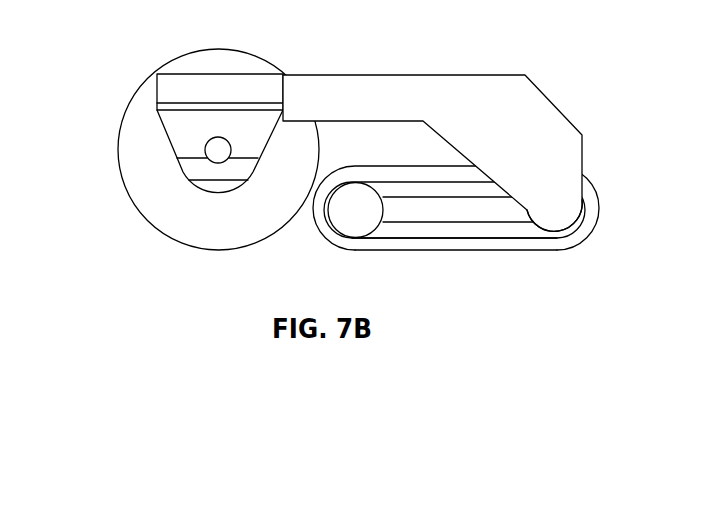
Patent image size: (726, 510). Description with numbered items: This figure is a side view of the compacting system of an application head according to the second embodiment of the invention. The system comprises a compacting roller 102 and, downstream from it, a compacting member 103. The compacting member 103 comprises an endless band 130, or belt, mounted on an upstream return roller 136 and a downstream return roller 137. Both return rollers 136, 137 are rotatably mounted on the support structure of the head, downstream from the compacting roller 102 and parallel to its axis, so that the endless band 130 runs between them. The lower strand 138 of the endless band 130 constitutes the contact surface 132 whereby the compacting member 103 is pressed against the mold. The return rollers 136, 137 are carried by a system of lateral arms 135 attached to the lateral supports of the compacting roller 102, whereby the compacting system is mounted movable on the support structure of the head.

The compacting roller 102 is at (188, 62).
The compacting member 103 is at (585, 181).
The endless band 130 is at (483, 245).
The contact surface 132 is at (548, 245).
The lateral arms 135 is at (415, 88).
The upstream return roller 136 is at (352, 212).
The downstream return roller 137 is at (563, 218).
The lower strand 138 is at (403, 244).